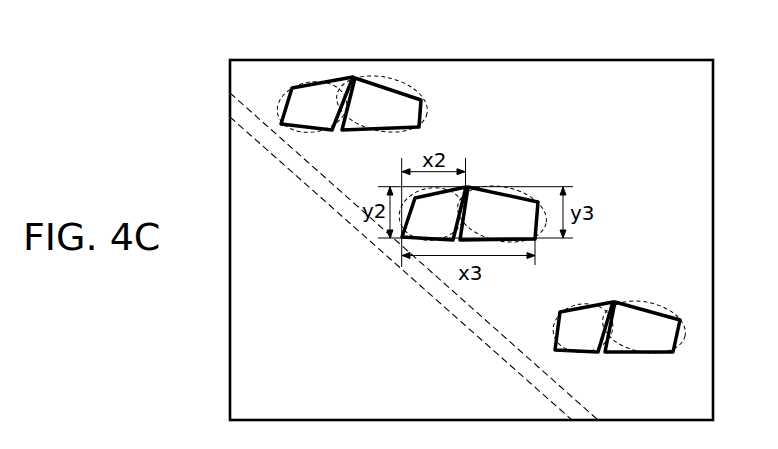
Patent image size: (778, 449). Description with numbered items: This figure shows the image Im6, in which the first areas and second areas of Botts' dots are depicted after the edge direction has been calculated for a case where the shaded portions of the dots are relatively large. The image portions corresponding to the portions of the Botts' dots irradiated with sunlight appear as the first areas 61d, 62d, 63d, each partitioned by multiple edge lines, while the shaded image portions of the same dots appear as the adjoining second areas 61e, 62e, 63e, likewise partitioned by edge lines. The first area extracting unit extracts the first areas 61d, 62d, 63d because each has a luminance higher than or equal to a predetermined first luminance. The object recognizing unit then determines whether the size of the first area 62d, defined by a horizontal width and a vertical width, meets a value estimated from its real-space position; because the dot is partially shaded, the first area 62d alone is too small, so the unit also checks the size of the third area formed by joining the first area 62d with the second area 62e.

The image Im6 is at (663, 60).
The first area 61d is at (562, 351).
The second area 61e is at (636, 316).
The first area 62d is at (401, 239).
The second area 62e is at (512, 207).
The first area 63d is at (301, 124).
The second area 63e is at (420, 106).